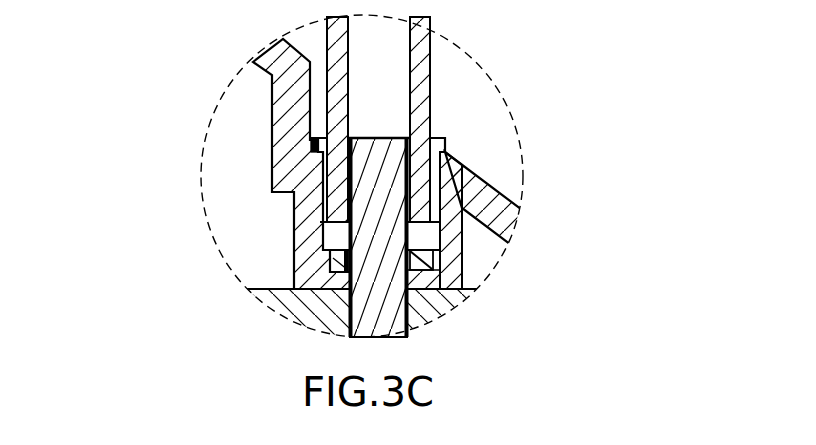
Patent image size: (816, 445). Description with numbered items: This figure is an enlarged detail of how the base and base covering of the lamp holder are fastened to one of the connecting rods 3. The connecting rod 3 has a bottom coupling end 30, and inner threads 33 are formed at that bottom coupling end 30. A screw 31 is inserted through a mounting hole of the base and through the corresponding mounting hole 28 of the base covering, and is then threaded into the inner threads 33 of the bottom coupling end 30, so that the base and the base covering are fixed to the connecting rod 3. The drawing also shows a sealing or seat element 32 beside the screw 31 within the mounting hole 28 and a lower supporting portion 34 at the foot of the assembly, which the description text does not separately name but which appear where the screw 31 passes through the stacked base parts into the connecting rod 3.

The connecting rod 3 is at (430, 62).
The mounting hole 28 is at (352, 235).
The bottom coupling end 30 is at (445, 147).
The screw 31 is at (410, 268).
The seal 32 is at (327, 267).
The inner threads 33 is at (440, 208).
The base 34 is at (480, 289).